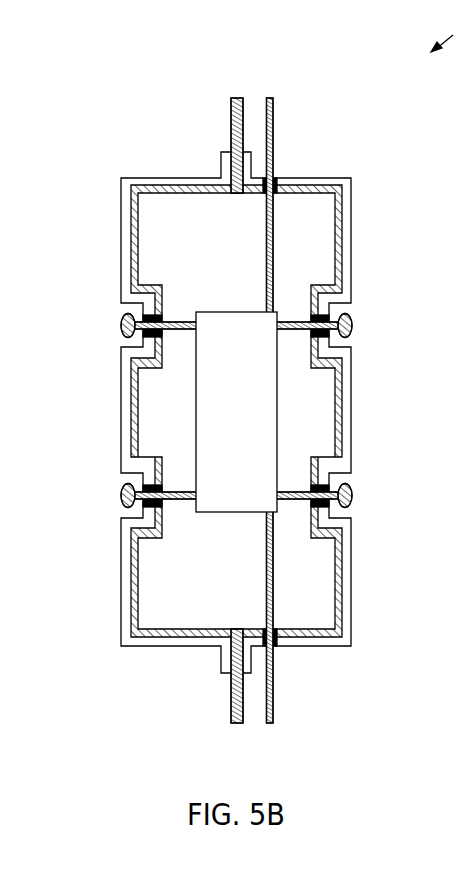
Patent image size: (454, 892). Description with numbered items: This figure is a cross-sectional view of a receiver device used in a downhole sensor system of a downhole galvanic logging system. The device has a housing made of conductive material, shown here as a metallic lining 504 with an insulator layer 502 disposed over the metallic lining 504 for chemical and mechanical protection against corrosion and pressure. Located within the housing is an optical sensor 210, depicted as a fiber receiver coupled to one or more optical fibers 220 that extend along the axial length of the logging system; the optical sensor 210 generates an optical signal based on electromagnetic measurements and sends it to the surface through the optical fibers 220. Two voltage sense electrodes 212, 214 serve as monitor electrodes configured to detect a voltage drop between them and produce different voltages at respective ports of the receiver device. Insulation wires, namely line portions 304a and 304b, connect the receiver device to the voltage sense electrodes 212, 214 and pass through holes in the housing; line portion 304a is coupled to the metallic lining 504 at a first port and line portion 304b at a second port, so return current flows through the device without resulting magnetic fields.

The insulator layer 502 is at (121, 194).
The metallic lining 504 is at (135, 255).
The line portion 304a is at (243, 104).
The line portion 304b is at (243, 687).
The optical fibers 220 is at (273, 136).
The voltage sense electrode 212 is at (352, 320).
The voltage sense electrode 214 is at (352, 490).
The optical sensor 210 is at (254, 408).